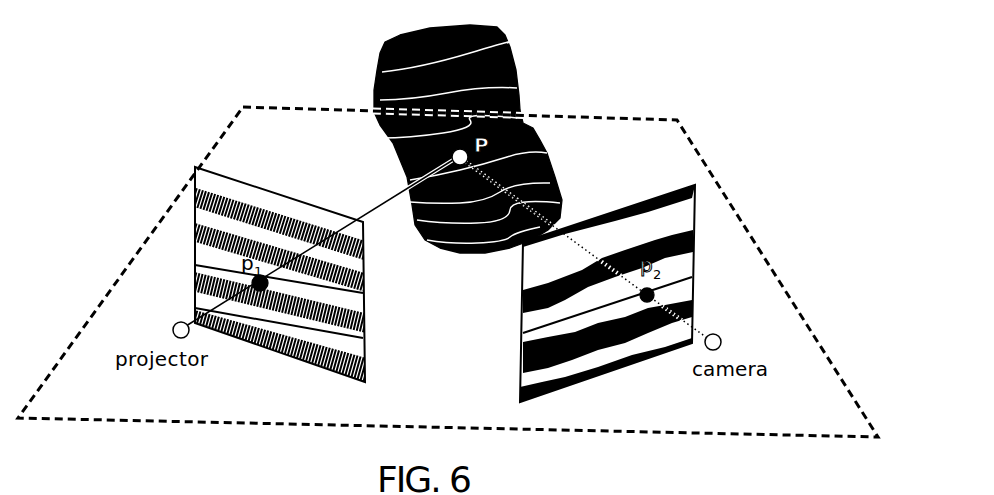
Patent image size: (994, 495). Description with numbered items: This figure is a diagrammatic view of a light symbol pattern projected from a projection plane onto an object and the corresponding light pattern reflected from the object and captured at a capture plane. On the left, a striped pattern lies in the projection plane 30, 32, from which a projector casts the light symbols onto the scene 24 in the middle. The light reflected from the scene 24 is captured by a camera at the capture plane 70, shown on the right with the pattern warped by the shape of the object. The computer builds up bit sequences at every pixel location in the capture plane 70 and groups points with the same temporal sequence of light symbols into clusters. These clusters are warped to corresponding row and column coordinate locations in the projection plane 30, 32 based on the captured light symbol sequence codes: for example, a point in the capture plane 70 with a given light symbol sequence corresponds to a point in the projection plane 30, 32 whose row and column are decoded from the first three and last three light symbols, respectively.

The scene 24 is at (545, 73).
The projection plane 30 is at (327, 274).
The projection plane 32 is at (363, 292).
The capture plane 70 is at (690, 292).